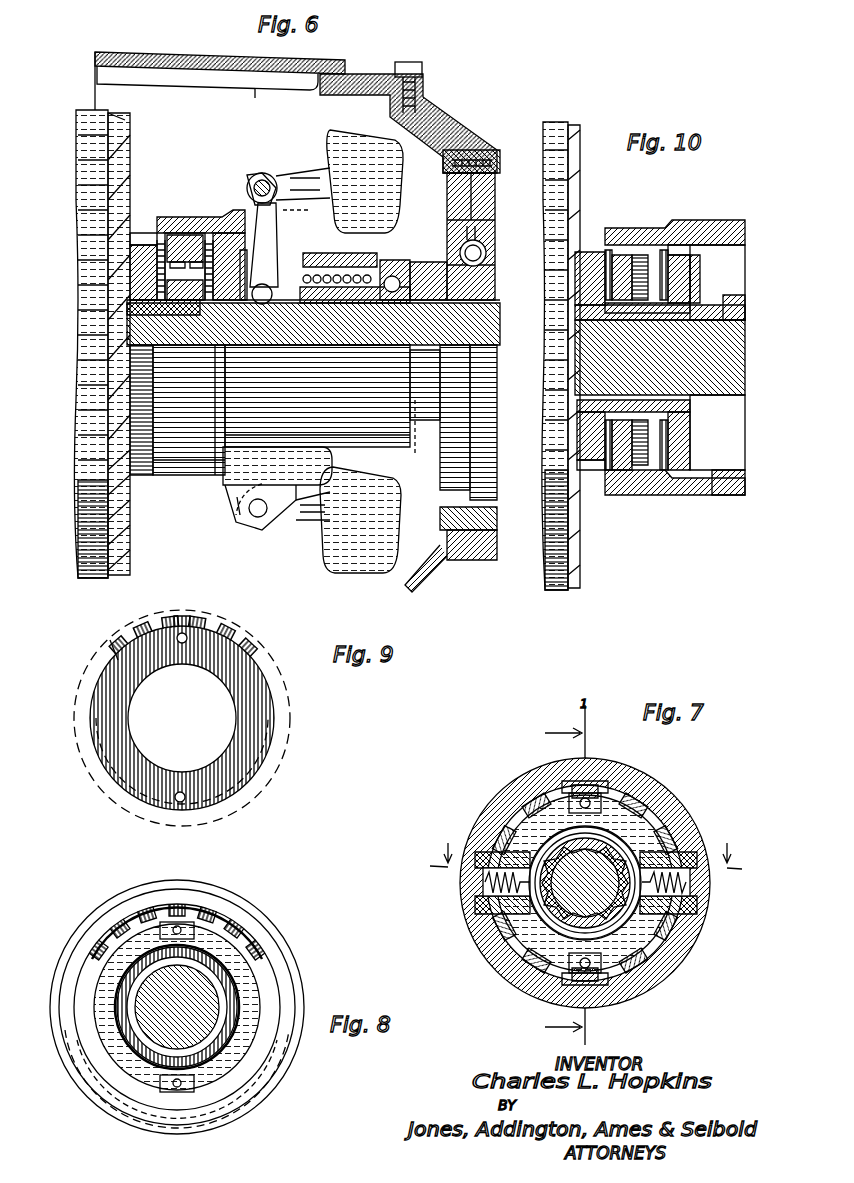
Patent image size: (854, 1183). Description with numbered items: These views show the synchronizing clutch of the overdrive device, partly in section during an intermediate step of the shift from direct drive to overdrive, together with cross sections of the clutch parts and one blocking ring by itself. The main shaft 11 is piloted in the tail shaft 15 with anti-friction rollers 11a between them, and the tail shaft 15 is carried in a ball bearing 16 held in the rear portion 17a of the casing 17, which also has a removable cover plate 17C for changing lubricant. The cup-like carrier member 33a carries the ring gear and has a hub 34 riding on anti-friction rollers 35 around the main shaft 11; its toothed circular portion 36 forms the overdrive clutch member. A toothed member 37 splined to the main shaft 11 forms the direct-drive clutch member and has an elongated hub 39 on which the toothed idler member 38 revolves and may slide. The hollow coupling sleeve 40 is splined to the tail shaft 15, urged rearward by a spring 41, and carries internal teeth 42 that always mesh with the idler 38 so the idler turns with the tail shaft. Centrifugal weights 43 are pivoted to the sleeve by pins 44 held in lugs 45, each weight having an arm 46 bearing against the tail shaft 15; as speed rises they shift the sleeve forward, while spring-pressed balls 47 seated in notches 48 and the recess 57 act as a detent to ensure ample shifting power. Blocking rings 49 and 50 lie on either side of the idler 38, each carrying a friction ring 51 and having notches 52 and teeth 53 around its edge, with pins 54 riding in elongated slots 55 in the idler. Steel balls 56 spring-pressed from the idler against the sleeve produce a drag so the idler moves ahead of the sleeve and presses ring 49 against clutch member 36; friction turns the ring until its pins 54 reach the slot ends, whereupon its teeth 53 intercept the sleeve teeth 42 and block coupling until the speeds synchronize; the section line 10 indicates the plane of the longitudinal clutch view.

In FIG. 7, the casing 10 is at (584, 860).
In FIG. 6, the main shaft 11 is at (498, 336).
In FIG. 10, the main shaft 11 is at (735, 357).
In FIG. 8, the main shaft 11 is at (205, 1008).
In FIG. 7, the main shaft 11 is at (570, 859).
In FIG. 6, the anti-friction rollers 11a is at (310, 340).
In FIG. 6, the tail shaft 15 is at (497, 303).
In FIG. 10, the tail shaft 15 is at (742, 310).
In FIG. 6, the ball bearing 16 is at (495, 228).
In FIG. 6, the casing of the overdrive device 17 is at (356, 72).
In FIG. 6, the removable cover plate 17C is at (256, 101).
In FIG. 6, the rear portion of the casing 17a is at (478, 150).
In FIG. 6, the ring gear carrier member 33a is at (124, 148).
In FIG. 10, the ring gear carrier member 33a is at (575, 553).
In FIG. 6, the hub 34 is at (130, 355).
In FIG. 6, the anti-friction rollers 35 is at (140, 308).
In FIG. 6, the circular toothed portion (overdrive clutch member) 36 is at (140, 258).
In FIG. 10, the circular toothed portion (overdrive clutch member) 36 is at (590, 470).
In FIG. 6, the toothed clutch member 37 is at (224, 230).
In FIG. 10, the toothed clutch member 37 is at (695, 265).
In FIG. 6, the toothed idler member 38 is at (172, 218).
In FIG. 10, the toothed idler member 38 is at (625, 480).
In FIG. 7, the toothed idler member 38 is at (668, 944).
In FIG. 6, the elongated hub 39 is at (200, 338).
In FIG. 10, the elongated hub 39 is at (690, 310).
In FIG. 8, the elongated hub 39 is at (222, 978).
In FIG. 7, the elongated hub 39 is at (612, 913).
In FIG. 6, the coupling member (coupling sleeve) 40 is at (224, 487).
In FIG. 10, the coupling member (coupling sleeve) 40 is at (706, 490).
In FIG. 8, the coupling member (coupling sleeve) 40 is at (242, 914).
In FIG. 7, the coupling member (coupling sleeve) 40 is at (670, 815).
In FIG. 6, the spring 41 is at (346, 278).
In FIG. 6, the elongated teeth 42 is at (194, 215).
In FIG. 10, the elongated teeth 42 is at (649, 248).
In FIG. 8, the elongated teeth 42 is at (134, 898).
In FIG. 6, the centrifugal weights 43 is at (393, 208).
In FIG. 6, the pins 44 is at (270, 178).
In FIG. 6, the lugs 45 is at (243, 203).
In FIG. 6, the arm 46 is at (274, 266).
In FIG. 6, the spring-pressed balls 47 is at (403, 268).
In FIG. 6, the notches 48 is at (420, 295).
In FIG. 6, the blocking ring 49 is at (155, 277).
In FIG. 10, the blocking ring 49 is at (605, 287).
In FIG. 9, the blocking ring 49 is at (264, 726).
In FIG. 8, the blocking ring 49 is at (196, 908).
In FIG. 6, the blocking ring 50 is at (240, 272).
In FIG. 10, the blocking ring 50 is at (693, 287).
In FIG. 9, the friction ring 51 is at (80, 697).
In FIG. 8, the friction ring 51 is at (100, 982).
In FIG. 9, the notches 52 is at (180, 614).
In FIG. 9, the teeth 53 is at (112, 640).
In FIG. 9, the pins 54 is at (182, 645).
In FIG. 7, the pins 54 is at (602, 801).
In FIG. 7, the elongated openings or slots 55 is at (565, 809).
In FIG. 10, the steel balls 56 is at (630, 240).
In FIG. 7, the steel balls 56 is at (485, 881).
In FIG. 6, the recess 57 is at (360, 354).